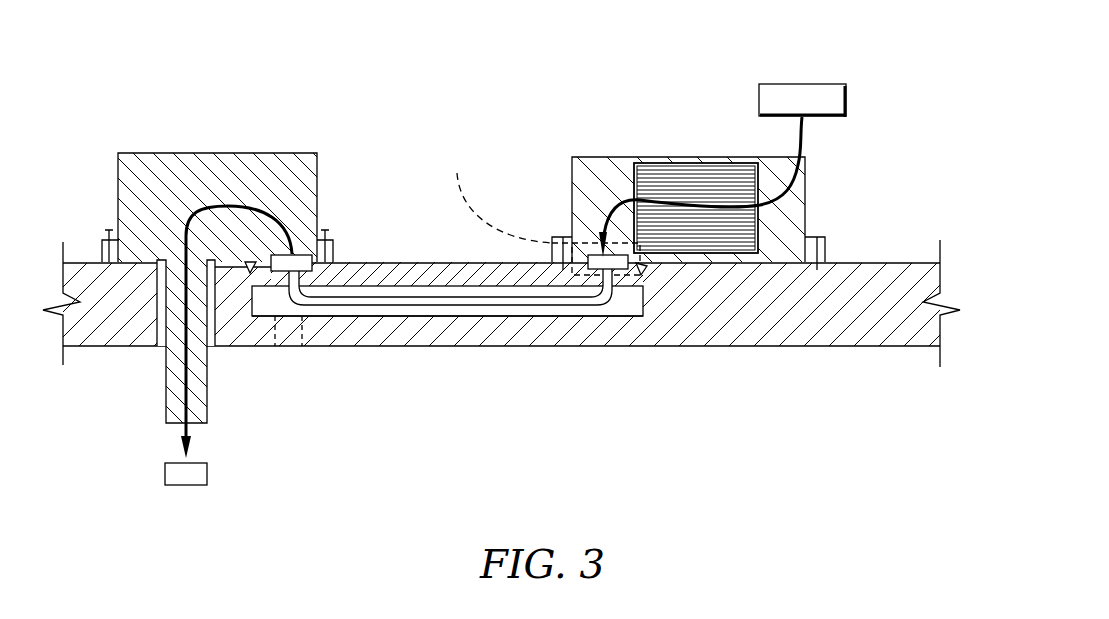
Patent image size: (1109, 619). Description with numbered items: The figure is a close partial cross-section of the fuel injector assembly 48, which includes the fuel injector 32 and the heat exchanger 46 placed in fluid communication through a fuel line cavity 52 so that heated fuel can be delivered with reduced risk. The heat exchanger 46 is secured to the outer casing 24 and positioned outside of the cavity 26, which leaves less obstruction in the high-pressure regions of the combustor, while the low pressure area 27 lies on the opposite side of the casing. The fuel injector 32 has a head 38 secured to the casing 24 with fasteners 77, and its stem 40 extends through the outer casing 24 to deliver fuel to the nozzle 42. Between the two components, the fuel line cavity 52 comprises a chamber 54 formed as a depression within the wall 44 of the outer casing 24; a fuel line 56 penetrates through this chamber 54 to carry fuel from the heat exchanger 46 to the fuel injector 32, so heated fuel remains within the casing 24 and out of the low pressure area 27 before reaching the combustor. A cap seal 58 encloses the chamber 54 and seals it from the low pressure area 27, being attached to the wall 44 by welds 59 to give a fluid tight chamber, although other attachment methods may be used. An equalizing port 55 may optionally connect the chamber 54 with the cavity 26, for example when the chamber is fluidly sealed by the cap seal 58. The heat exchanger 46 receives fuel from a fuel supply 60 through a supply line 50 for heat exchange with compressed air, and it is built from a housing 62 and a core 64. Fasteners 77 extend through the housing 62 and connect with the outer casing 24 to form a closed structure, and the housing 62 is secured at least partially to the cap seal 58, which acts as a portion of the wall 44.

The outer casing 24 is at (889, 246).
The cavity 26 is at (477, 392).
The low pressure area 27 is at (256, 118).
The fuel injector 32 is at (147, 104).
The head 38 is at (163, 152).
The stem 40 is at (207, 400).
The nozzle 42 is at (207, 468).
The wall 44 is at (873, 330).
The heat exchanger 46 is at (570, 118).
The fuel injector assembly 48 is at (874, 62).
The supply line 50 is at (802, 137).
The fuel line cavity 52 is at (622, 305).
The chamber 54 is at (542, 312).
The equalizing port 55 is at (303, 338).
The fuel line 56 is at (353, 297).
The cap seal 58 is at (416, 272).
The welds 59 is at (249, 273).
The fuel supply 60 is at (811, 84).
The housing 62 is at (597, 163).
The core 64 is at (700, 165).
The fasteners 77 is at (563, 222).